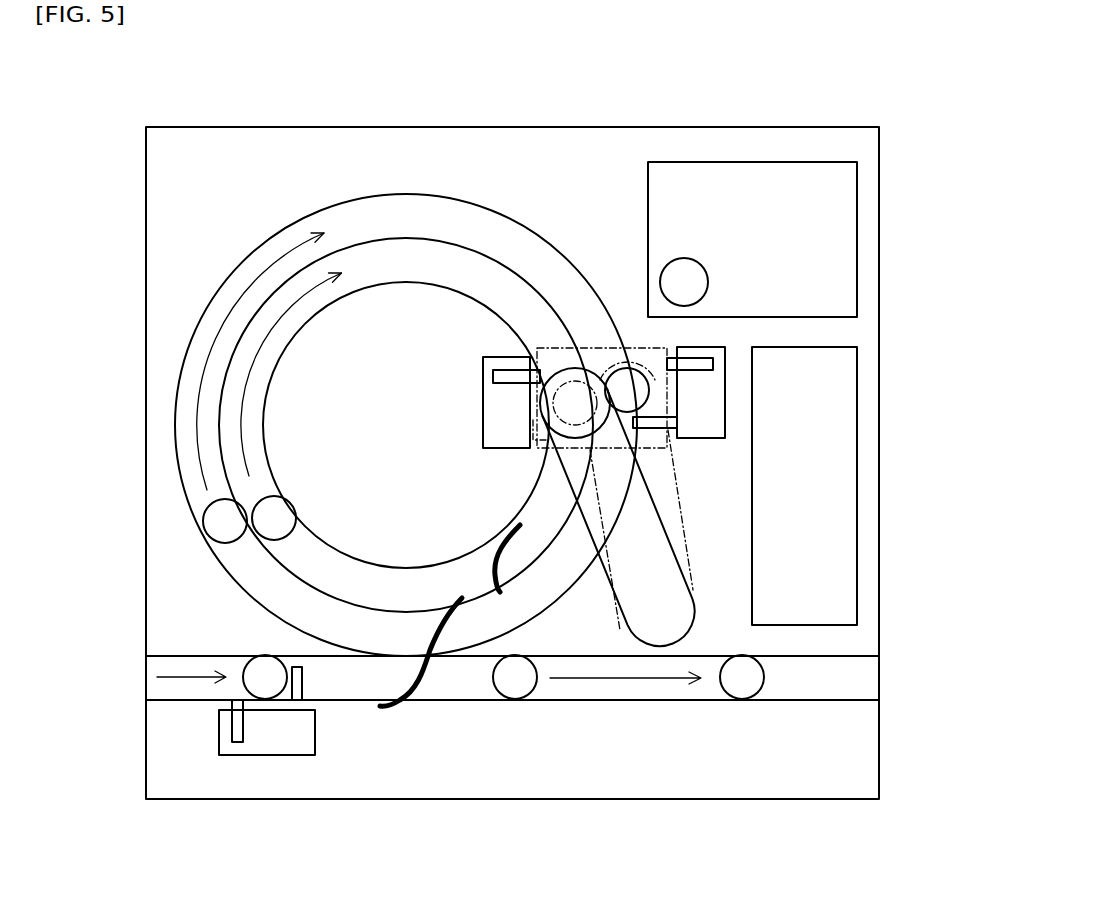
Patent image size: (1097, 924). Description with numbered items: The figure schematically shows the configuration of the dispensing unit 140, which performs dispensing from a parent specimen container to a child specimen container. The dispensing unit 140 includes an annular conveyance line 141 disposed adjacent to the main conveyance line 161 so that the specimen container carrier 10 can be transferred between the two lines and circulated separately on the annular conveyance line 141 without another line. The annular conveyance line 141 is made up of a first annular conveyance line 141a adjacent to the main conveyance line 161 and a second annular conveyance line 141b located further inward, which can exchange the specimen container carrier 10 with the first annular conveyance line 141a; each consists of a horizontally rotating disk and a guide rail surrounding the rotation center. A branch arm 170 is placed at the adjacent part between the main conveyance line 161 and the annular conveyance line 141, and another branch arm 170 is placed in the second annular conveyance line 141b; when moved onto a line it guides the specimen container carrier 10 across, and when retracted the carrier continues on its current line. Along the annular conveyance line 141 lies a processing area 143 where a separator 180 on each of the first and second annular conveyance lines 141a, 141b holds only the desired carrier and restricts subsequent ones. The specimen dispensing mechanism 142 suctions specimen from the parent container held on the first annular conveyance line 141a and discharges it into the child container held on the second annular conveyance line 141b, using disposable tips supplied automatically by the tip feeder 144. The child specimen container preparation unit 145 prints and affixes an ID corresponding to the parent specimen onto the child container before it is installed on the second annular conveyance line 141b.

The specimen container carrier 10 is at (215, 530).
The dispensing unit 140 is at (186, 125).
The annular conveyance line 141 is at (406, 357).
The first annular conveyance line 141a is at (460, 212).
The second annular conveyance line 141b is at (508, 280).
The specimen dispensing mechanism 142 is at (660, 627).
The processing area 143 is at (620, 348).
The tip feeder 144 is at (842, 523).
The child specimen container preparation unit 145 is at (728, 170).
The main conveyance line 161 is at (862, 677).
The branch arm 170 is at (450, 600).
The separator 180 is at (482, 405).